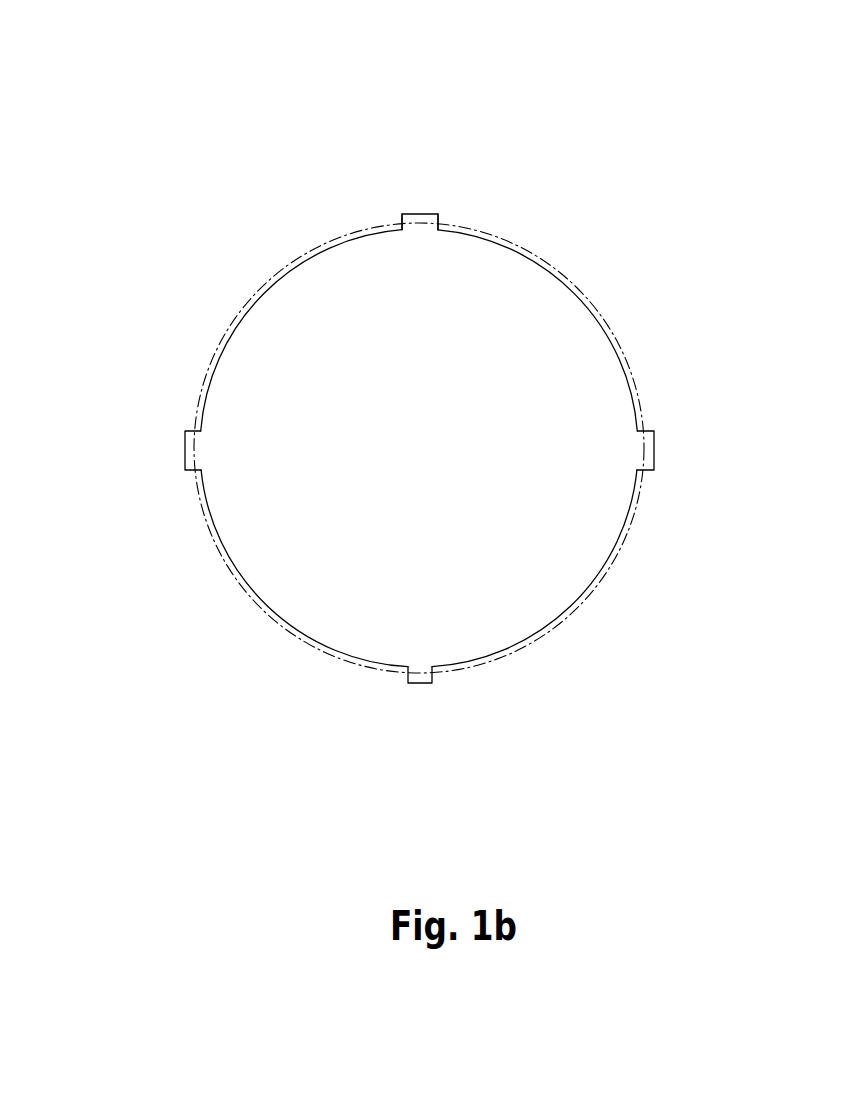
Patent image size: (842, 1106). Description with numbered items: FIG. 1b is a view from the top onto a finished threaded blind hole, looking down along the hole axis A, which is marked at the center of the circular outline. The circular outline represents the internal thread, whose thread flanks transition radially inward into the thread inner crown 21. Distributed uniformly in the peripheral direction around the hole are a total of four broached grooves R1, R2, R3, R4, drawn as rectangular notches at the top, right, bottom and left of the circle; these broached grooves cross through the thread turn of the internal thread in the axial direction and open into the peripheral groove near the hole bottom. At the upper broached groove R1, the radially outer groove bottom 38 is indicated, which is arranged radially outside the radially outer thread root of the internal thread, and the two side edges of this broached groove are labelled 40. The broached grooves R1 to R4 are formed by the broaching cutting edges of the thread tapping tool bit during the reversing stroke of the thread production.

The thread inner crown 21 is at (612, 327).
The radially outer groove bottom 38 is at (421, 214).
The side edges of recess 40 is at (533, 84).
The broached groove R1 is at (455, 128).
The broached groove R2 is at (660, 448).
The broached groove R3 is at (422, 688).
The broached groove R4 is at (185, 444).
The hole axis A is at (474, 379).